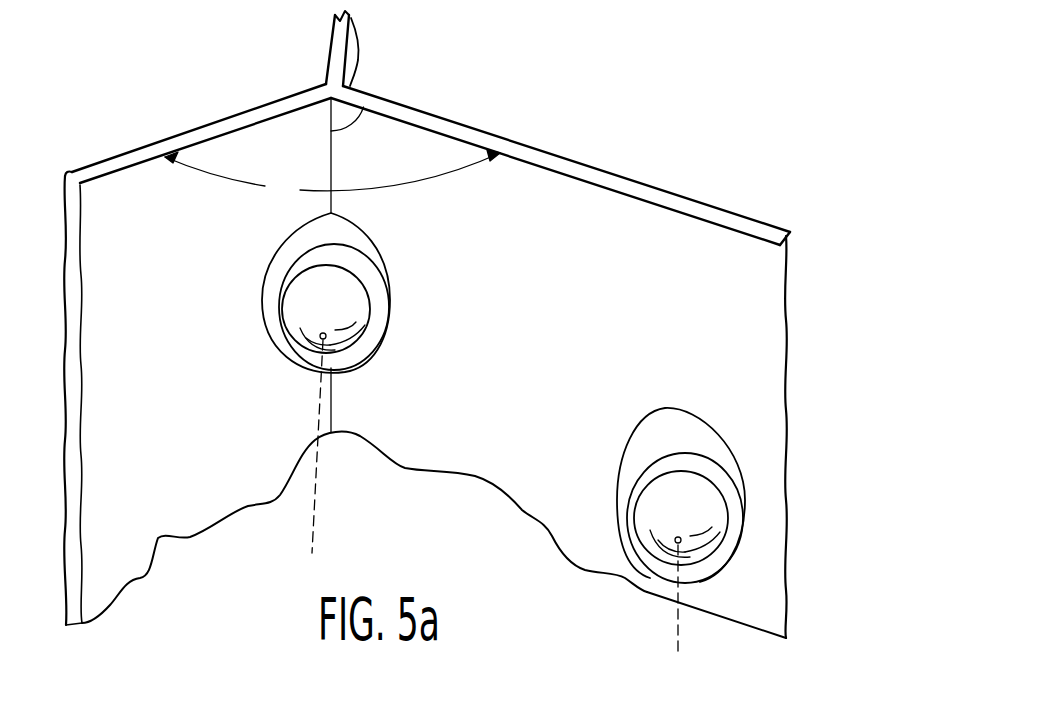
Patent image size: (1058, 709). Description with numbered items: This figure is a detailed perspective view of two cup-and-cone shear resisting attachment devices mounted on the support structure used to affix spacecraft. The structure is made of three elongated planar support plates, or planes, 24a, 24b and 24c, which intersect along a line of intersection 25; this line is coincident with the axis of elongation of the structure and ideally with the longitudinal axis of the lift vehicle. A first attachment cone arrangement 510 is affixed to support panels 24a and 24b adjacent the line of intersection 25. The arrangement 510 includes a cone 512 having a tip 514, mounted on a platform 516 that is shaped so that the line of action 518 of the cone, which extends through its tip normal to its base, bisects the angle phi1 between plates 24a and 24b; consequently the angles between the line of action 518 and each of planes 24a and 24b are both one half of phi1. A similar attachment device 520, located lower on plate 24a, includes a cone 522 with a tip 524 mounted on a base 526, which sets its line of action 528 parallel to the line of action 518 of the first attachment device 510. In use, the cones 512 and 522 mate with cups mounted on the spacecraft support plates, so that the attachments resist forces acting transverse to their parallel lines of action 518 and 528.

The elongated planar support plate 24a is at (633, 181).
The elongated planar support plate 24b is at (192, 128).
The elongated planar support plate 24c is at (327, 45).
The line of intersection 25 is at (365, 112).
The angle between plates phi1 is at (332, 176).
The first attachment cone arrangement 510 is at (352, 252).
The cone 512 is at (353, 285).
The tip 514 is at (337, 318).
The platform 516 is at (305, 232).
The line of action 518 is at (317, 507).
The attachment device 520 is at (717, 475).
The cone 522 is at (690, 537).
The tip 524 is at (715, 513).
The base 526 is at (675, 417).
The line of action 528 is at (678, 630).